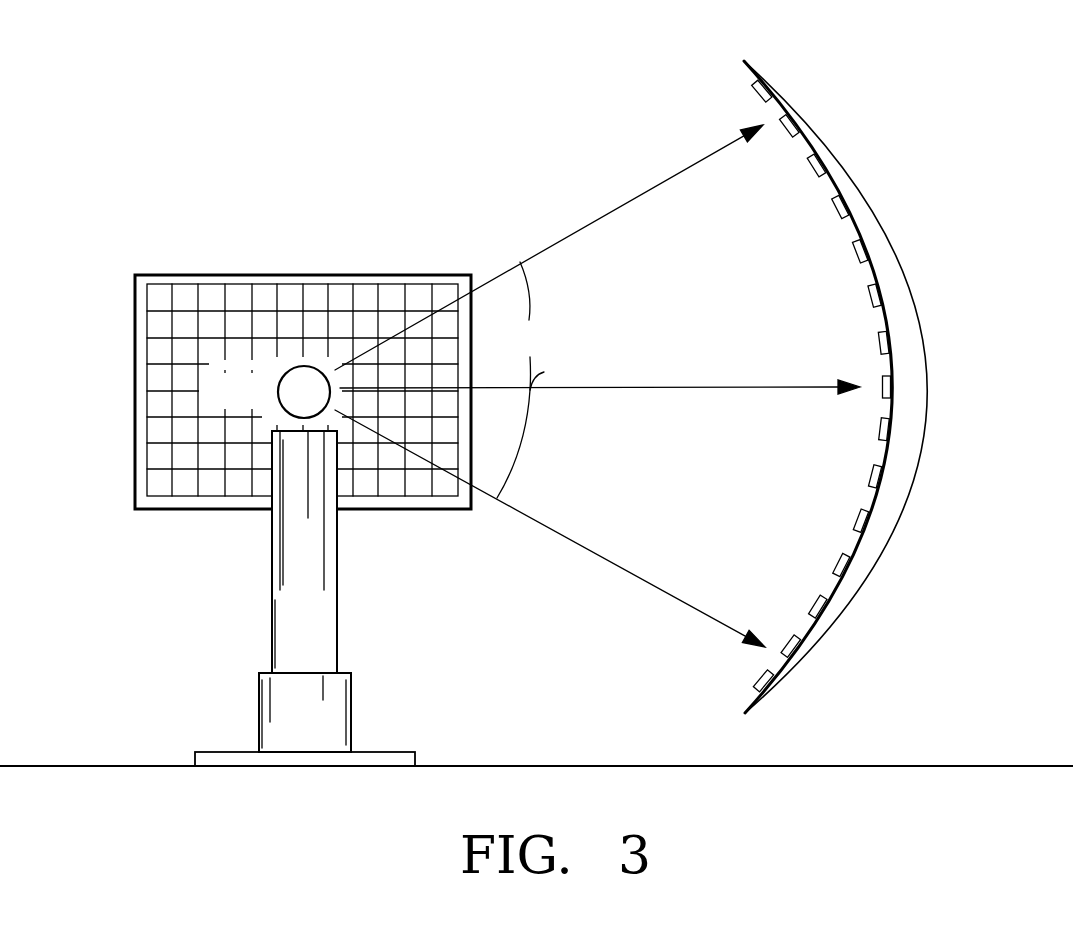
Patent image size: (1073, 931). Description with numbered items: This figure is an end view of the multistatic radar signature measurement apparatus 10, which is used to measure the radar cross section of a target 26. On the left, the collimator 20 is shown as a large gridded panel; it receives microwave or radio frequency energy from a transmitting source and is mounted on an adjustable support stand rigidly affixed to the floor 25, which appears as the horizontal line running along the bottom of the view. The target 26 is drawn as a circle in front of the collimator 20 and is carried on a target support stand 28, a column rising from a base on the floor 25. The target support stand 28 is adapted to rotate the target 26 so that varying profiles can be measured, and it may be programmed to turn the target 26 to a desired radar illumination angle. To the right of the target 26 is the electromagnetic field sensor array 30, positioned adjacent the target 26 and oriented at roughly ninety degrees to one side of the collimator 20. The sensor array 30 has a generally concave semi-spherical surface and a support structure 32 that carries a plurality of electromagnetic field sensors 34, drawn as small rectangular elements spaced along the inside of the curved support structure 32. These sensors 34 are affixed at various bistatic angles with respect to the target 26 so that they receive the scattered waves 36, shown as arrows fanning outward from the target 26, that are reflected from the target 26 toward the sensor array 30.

The multistatic radar signature measurement apparatus 10 is at (461, 135).
The collimator 20 is at (180, 283).
The floor 25 is at (968, 763).
The target 26 is at (286, 389).
The target support stand 28 is at (272, 600).
The electromagnetic field sensor array 30 is at (854, 387).
The support structure 32 is at (892, 253).
The electromagnetic field sensors 34 is at (855, 540).
The scattered waves 36 is at (597, 386).